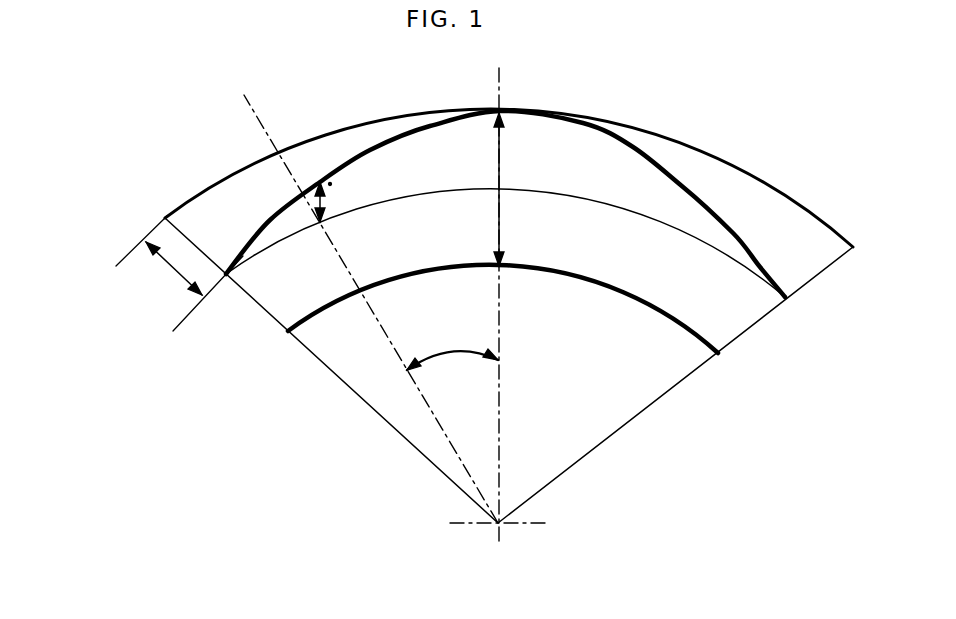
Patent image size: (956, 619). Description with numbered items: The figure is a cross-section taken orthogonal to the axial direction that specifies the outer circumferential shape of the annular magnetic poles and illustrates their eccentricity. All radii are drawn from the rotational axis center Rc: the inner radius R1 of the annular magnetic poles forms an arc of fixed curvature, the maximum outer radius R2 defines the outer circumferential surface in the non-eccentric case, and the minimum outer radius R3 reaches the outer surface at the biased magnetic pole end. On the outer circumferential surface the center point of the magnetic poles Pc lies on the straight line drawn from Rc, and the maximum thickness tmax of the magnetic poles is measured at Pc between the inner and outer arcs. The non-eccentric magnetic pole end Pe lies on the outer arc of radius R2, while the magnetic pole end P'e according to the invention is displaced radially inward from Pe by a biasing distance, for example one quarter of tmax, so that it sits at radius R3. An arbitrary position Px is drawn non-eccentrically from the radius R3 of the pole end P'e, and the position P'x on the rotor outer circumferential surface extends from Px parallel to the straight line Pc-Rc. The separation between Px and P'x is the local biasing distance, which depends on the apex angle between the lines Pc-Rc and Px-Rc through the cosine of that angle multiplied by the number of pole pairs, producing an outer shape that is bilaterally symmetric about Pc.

The center point of the magnetic poles Pc is at (588, 93).
The non-eccentric magnetic pole end Pe is at (165, 218).
The magnetic pole end P'e is at (450, 247).
The arbitrary position on the rotor outer circumferential surface Px is at (319, 228).
The position on the rotor outer circumferential surface P'x is at (384, 216).
The maximum thickness of the magnetic poles tmax is at (590, 187).
The inner radius of the annular magnetic poles R1 is at (498, 523).
The maximum outer radius of the annular magnetic poles R2 is at (733, 168).
The minimum outer radius of the annular magnetic poles R3 is at (498, 523).
The rotational axis center Rc is at (495, 524).